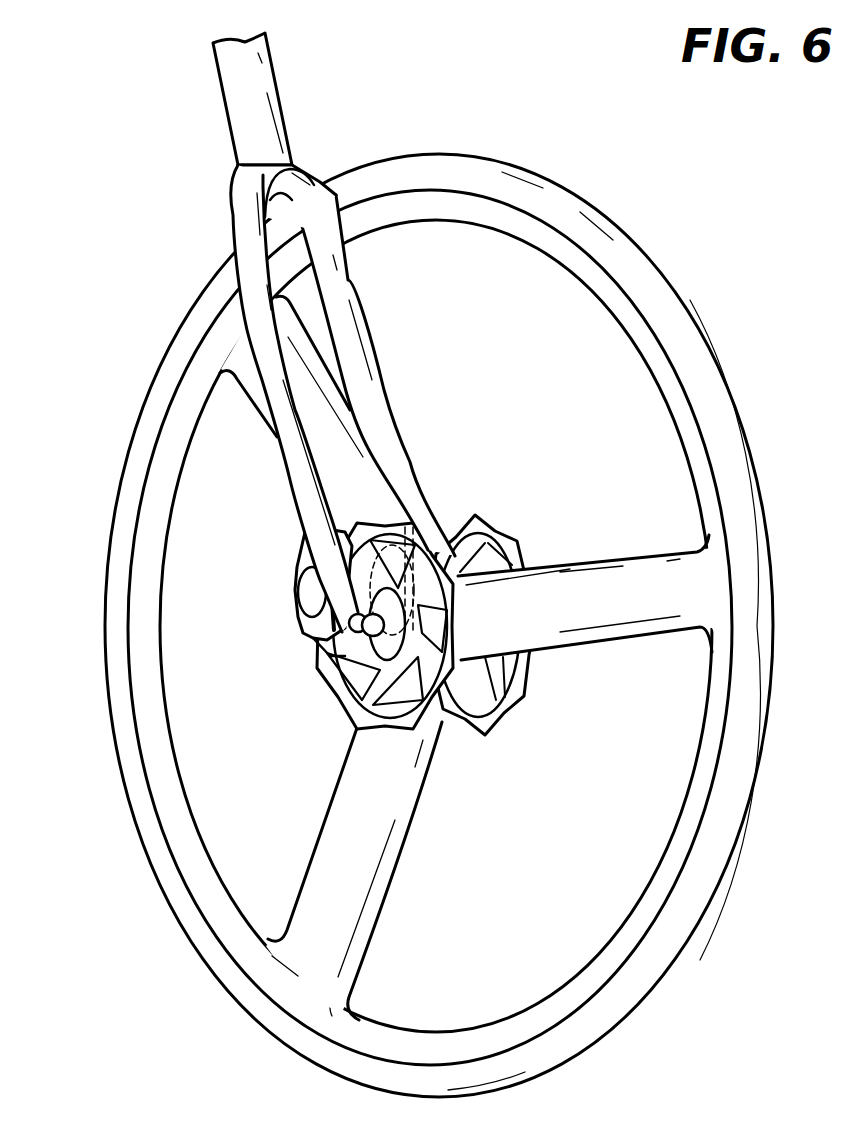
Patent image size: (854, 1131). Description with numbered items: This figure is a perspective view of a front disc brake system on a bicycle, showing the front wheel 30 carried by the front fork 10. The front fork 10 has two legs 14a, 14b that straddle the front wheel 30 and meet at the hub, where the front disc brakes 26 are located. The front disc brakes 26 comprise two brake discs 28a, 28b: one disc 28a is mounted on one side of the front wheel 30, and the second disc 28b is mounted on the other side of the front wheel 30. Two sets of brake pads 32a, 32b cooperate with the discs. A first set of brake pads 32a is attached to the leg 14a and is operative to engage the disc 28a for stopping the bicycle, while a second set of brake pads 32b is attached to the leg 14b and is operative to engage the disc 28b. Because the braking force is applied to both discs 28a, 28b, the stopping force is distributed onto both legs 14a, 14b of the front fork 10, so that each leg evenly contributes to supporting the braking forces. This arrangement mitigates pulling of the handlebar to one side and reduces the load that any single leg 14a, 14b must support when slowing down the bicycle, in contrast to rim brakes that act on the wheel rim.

The front fork 10 is at (430, 563).
The leg 14a is at (260, 318).
The leg 14b is at (347, 325).
The front disc brakes 26 is at (452, 584).
The brake disc 28a is at (346, 712).
The brake disc 28b is at (470, 522).
The front wheel 30 is at (439, 625).
The first set of brake pads 32a is at (253, 515).
The second set of brake pads 32b is at (408, 512).